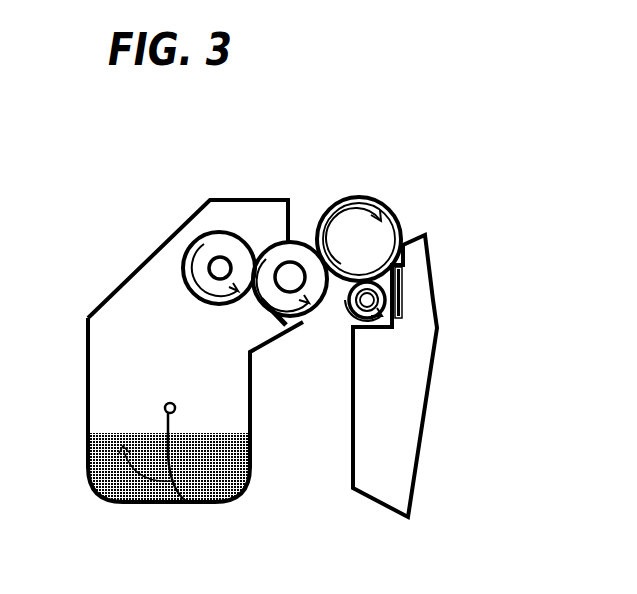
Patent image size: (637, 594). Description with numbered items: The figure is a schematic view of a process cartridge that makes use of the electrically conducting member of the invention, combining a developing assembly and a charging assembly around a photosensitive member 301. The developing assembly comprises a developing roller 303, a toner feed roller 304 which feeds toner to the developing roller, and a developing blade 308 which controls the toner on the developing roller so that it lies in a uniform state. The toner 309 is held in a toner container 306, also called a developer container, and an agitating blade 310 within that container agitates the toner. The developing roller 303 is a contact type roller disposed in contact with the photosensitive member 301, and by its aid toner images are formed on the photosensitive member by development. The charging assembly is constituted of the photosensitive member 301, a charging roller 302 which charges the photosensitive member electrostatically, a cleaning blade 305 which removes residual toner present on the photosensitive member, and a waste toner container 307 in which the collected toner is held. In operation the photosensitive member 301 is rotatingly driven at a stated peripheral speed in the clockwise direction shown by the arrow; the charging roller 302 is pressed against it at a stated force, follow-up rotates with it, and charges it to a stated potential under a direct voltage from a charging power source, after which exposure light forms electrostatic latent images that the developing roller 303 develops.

The photosensitive member 301 is at (384, 200).
The charging roller 302 is at (349, 302).
The developing roller 303 is at (283, 253).
The toner feed roller 304 is at (217, 231).
The cleaning blade 305 is at (403, 283).
The toner container 306 is at (86, 313).
The waste toner container 307 is at (422, 438).
The developing blade 308 is at (270, 320).
The toner 309 is at (142, 438).
The agitating blade 310 is at (173, 420).